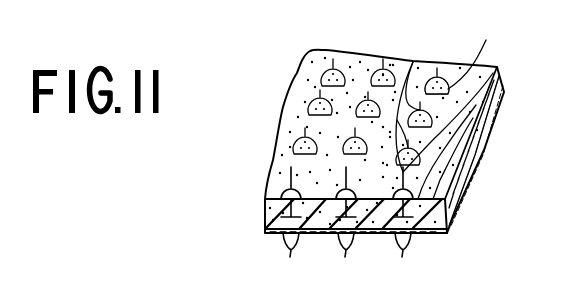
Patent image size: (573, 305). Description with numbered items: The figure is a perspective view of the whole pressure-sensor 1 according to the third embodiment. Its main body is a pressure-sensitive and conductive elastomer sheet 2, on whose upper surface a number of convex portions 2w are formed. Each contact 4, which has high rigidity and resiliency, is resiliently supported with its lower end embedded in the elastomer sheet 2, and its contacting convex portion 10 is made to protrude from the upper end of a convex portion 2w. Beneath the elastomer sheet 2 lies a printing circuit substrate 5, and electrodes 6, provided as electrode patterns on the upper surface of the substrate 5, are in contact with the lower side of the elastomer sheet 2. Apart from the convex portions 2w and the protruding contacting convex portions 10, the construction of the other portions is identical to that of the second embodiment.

The pressure-sensor 1 is at (517, 84).
The pressure-sensitive and conductive elastomer sheet 2 is at (465, 132).
The convex portions 2w is at (453, 107).
The contact 4 is at (437, 68).
The contacting convex portion 10 is at (437, 85).
The printing circuit substrate 5 is at (465, 185).
The electrodes 6 is at (347, 225).